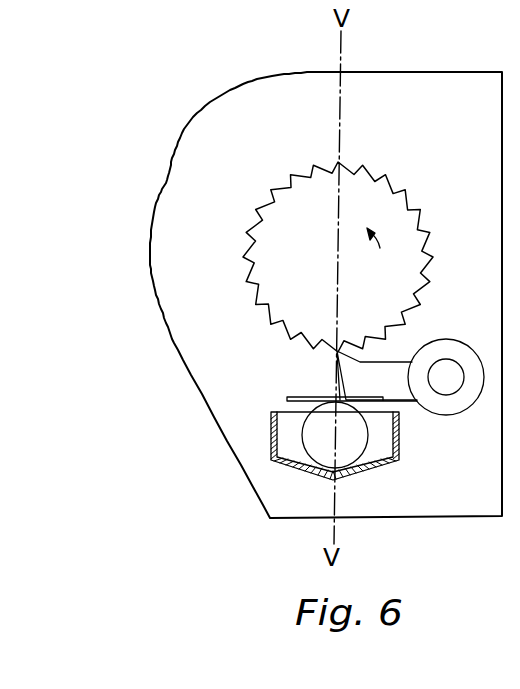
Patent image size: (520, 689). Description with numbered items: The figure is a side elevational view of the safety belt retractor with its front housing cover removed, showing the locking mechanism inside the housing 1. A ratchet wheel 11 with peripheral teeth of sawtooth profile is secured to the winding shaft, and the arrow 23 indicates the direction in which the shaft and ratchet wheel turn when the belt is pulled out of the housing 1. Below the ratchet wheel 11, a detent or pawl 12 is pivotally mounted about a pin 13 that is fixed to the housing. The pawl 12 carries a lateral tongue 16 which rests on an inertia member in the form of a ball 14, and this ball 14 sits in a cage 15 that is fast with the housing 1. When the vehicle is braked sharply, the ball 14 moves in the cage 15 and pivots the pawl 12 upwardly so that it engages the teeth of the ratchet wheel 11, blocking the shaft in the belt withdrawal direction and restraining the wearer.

The housing 1 is at (256, 99).
The ratchet wheel 11 is at (374, 173).
The detent or pawl 12 is at (392, 368).
The pin 13 is at (446, 383).
The ball 14 is at (305, 433).
The cage 15 is at (382, 438).
The lateral tongue 16 is at (310, 396).
The arrow 23 is at (392, 268).